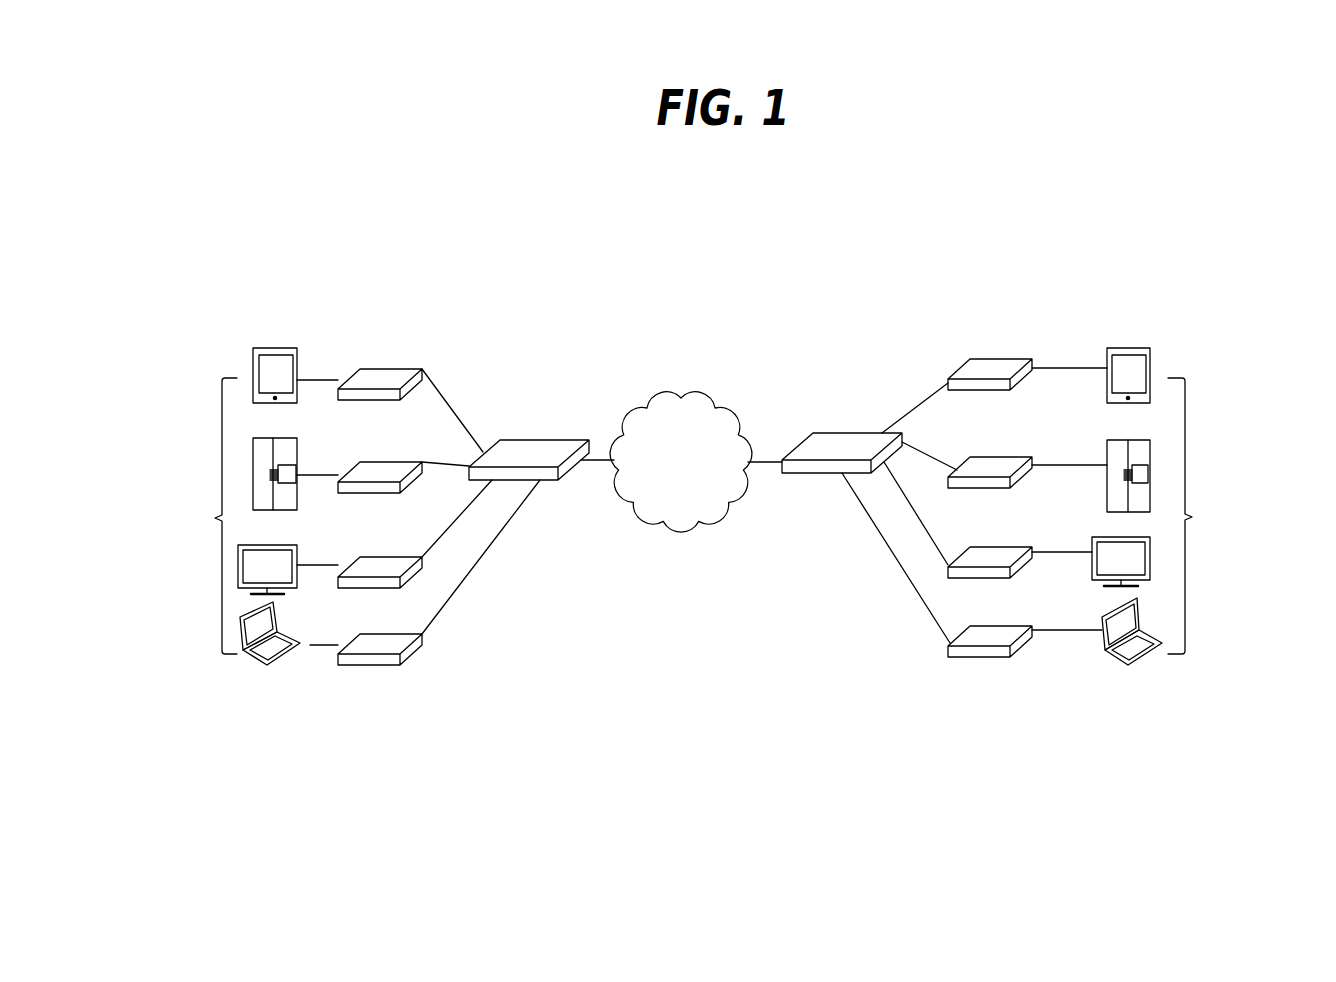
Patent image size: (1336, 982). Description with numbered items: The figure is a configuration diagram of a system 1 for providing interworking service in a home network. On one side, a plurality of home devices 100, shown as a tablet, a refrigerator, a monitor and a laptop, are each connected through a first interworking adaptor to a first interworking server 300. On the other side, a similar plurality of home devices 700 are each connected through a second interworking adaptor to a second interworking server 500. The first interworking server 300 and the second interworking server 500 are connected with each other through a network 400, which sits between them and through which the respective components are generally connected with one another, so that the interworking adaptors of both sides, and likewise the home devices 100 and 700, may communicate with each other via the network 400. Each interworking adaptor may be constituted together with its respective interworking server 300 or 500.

The system for providing interworking service in a home network 1 is at (757, 303).
The home devices 100 is at (253, 506).
The first interworking server 300 is at (566, 440).
The network 400 is at (722, 410).
The second interworking server 500 is at (849, 433).
The home devices 700 is at (1167, 506).